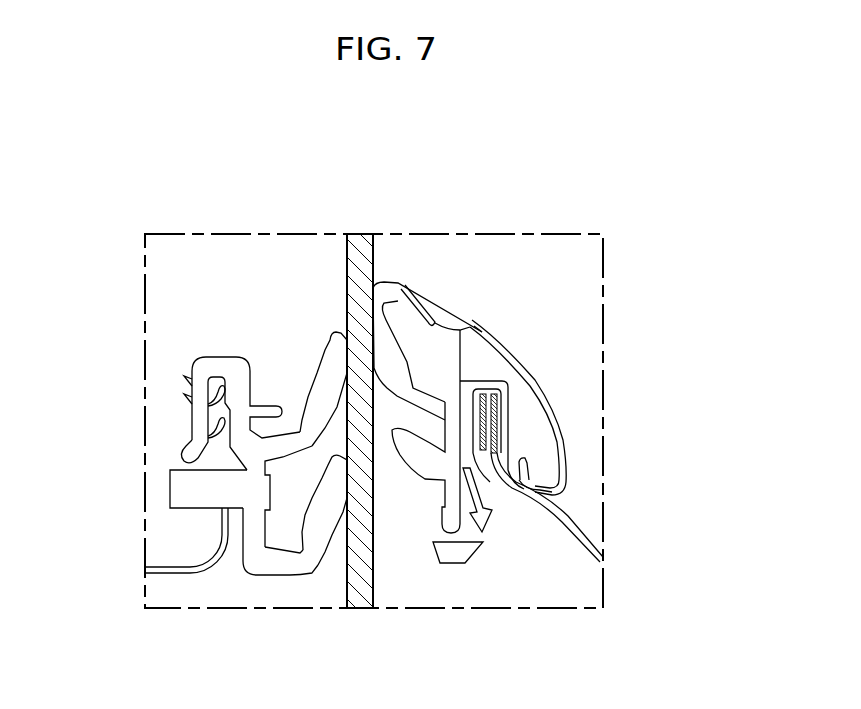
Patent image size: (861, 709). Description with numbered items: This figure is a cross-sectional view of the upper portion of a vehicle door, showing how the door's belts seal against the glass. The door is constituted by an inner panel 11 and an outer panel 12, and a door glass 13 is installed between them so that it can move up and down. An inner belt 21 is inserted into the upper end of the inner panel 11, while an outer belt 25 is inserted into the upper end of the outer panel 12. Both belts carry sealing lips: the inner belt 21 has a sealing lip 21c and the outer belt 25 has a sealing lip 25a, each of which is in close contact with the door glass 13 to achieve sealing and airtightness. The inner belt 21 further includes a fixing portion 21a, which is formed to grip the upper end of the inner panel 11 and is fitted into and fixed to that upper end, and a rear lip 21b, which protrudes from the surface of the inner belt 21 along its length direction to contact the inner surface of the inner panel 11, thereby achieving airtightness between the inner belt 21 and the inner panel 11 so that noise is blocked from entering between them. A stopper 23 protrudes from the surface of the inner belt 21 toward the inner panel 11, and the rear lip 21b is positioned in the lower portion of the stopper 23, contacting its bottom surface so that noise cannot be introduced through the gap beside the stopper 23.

The inner panel 11 is at (187, 568).
The outer panel 12 is at (572, 520).
The door glass 13 is at (367, 570).
The inner belt 21 is at (295, 430).
The fixing portion 21a is at (205, 410).
The rear lip 21b is at (232, 518).
The sealing lip 21c is at (323, 370).
The stopper 23 is at (187, 487).
The outer belt 25 is at (461, 400).
The sealing lip 25a is at (397, 362).